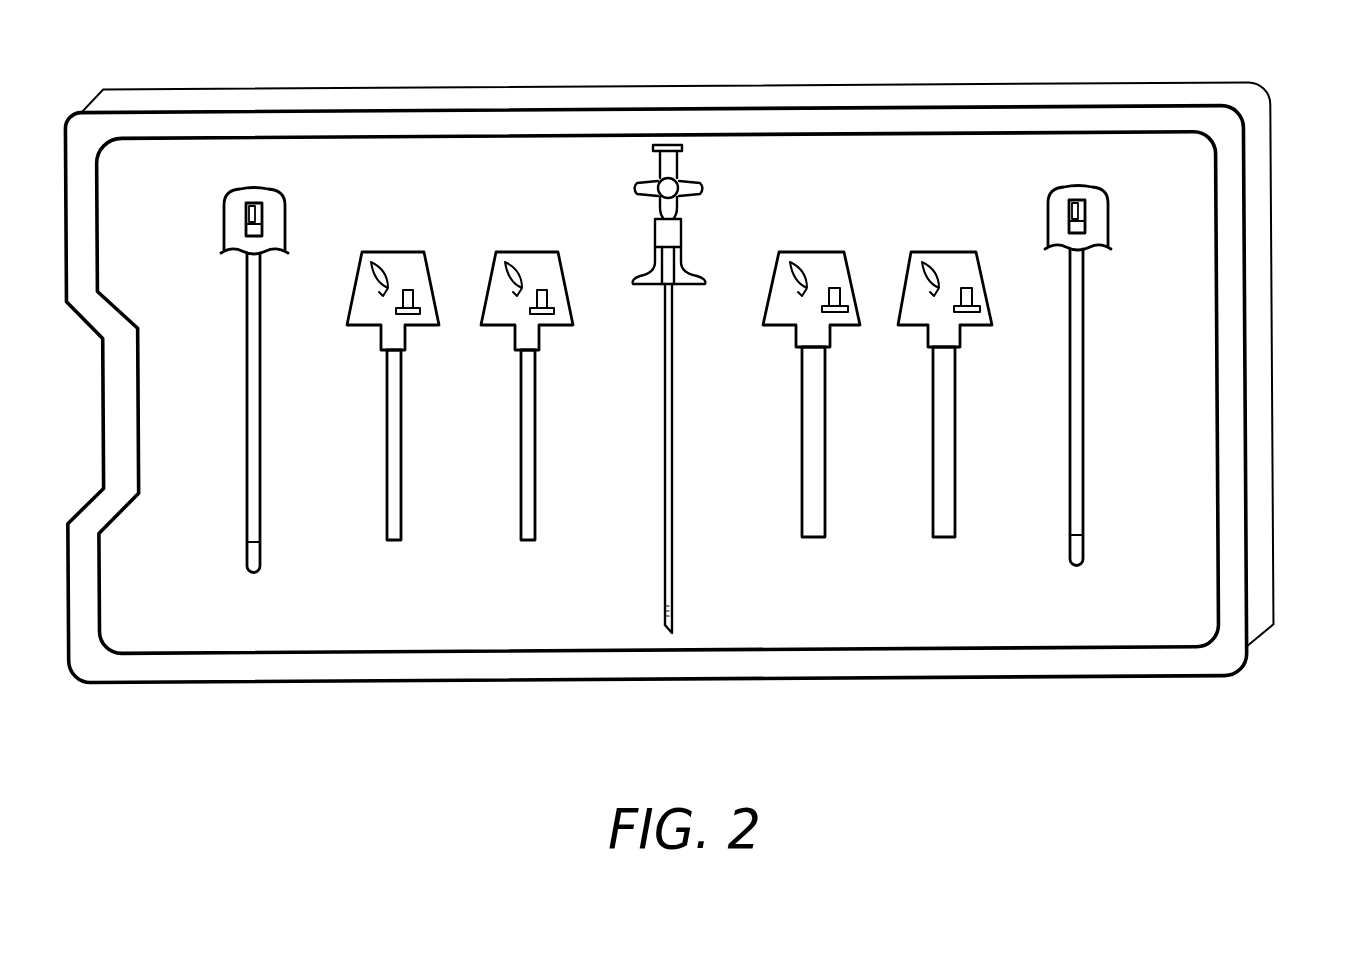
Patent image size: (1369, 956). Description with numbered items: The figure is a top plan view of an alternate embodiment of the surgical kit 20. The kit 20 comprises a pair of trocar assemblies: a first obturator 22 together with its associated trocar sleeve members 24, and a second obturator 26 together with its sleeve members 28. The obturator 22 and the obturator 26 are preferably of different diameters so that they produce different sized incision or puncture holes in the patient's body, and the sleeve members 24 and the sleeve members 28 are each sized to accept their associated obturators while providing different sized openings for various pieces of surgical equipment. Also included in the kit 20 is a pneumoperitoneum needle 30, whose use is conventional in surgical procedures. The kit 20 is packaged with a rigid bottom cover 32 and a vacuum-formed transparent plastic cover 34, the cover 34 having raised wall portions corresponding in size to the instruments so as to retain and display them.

The kit 20 is at (709, 382).
The obturator 22 is at (281, 202).
The trocar sleeve members 24 is at (503, 257).
The obturator 26 is at (1098, 202).
The sleeve members 28 is at (923, 257).
The pneumoperitoneum needle 30 is at (668, 163).
The rigid bottom cover 32 is at (1272, 433).
The vacuum-formed transparent plastic cover 34 is at (1228, 597).